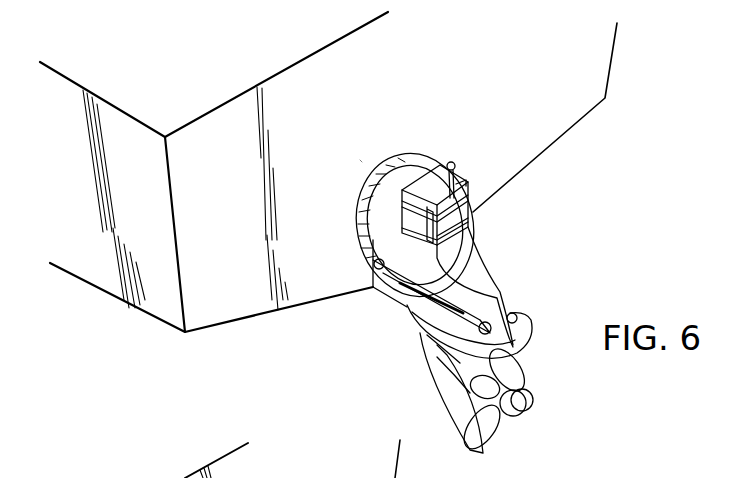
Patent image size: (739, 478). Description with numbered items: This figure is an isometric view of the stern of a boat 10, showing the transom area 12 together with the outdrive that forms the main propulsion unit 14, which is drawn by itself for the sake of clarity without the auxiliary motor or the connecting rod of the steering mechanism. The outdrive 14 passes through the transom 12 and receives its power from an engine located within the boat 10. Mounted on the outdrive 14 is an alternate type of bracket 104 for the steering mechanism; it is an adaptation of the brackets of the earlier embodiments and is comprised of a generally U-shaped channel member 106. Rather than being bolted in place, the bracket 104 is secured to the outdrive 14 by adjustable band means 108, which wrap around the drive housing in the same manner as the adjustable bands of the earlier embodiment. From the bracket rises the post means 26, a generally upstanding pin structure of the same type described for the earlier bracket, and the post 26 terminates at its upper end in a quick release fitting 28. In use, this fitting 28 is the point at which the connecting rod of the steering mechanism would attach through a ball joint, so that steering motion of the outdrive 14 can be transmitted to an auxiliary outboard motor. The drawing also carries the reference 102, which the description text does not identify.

The boat 10 is at (630, 75).
The transom 12 is at (568, 116).
The main propulsion unit 14 is at (502, 265).
The post means 26 is at (468, 181).
The quick release fitting 28 is at (463, 165).
The boat 102 is at (214, 4).
The bracket 104 is at (472, 213).
The U-shaped channel member 106 is at (470, 232).
The adjustable band means 108 is at (395, 210).